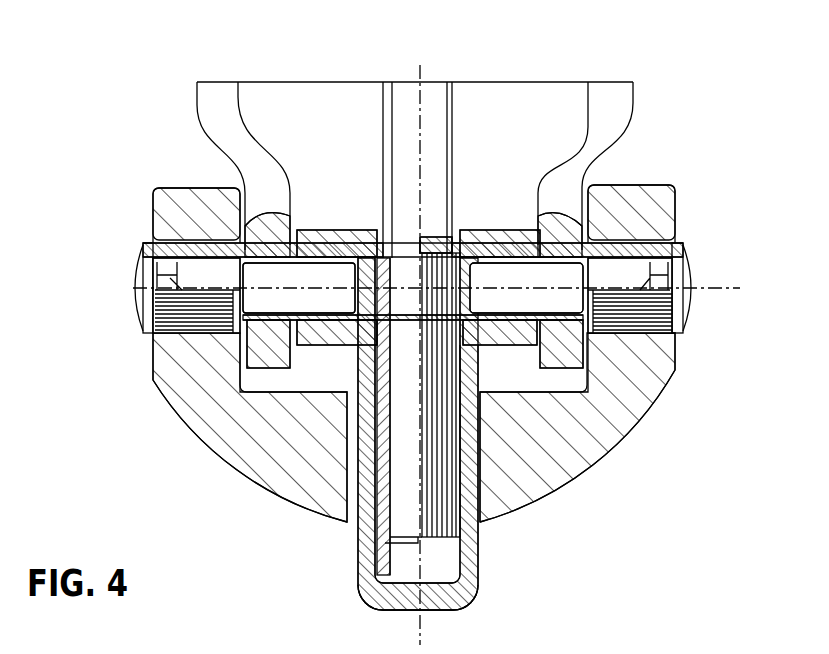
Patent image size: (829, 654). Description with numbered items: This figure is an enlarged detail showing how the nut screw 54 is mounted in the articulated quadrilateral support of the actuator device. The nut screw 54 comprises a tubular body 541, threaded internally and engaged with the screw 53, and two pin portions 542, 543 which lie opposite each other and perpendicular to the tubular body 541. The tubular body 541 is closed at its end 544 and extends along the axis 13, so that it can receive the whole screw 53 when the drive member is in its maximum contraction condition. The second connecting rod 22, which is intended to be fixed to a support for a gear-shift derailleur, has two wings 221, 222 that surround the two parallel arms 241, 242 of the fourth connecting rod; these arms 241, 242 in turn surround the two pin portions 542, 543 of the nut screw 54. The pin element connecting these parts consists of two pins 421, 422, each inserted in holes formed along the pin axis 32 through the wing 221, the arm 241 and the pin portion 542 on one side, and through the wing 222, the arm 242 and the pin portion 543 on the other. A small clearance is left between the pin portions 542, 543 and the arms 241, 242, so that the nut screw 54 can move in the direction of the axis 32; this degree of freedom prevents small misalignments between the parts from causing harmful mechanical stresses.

The axis 13 is at (420, 72).
The screw 53 is at (440, 103).
The arm 241 is at (212, 105).
The arm 242 is at (618, 103).
The pin portion 542 is at (312, 238).
The pin portion 543 is at (493, 233).
The pin 421 is at (130, 290).
The pin 422 is at (695, 283).
The pin axis 32 is at (732, 289).
The wing 221 is at (170, 358).
The wing 222 is at (658, 360).
The second connecting rod 22 is at (408, 446).
The nut screw 54 is at (354, 367).
The tubular body 541 is at (468, 548).
The end 544 is at (440, 606).